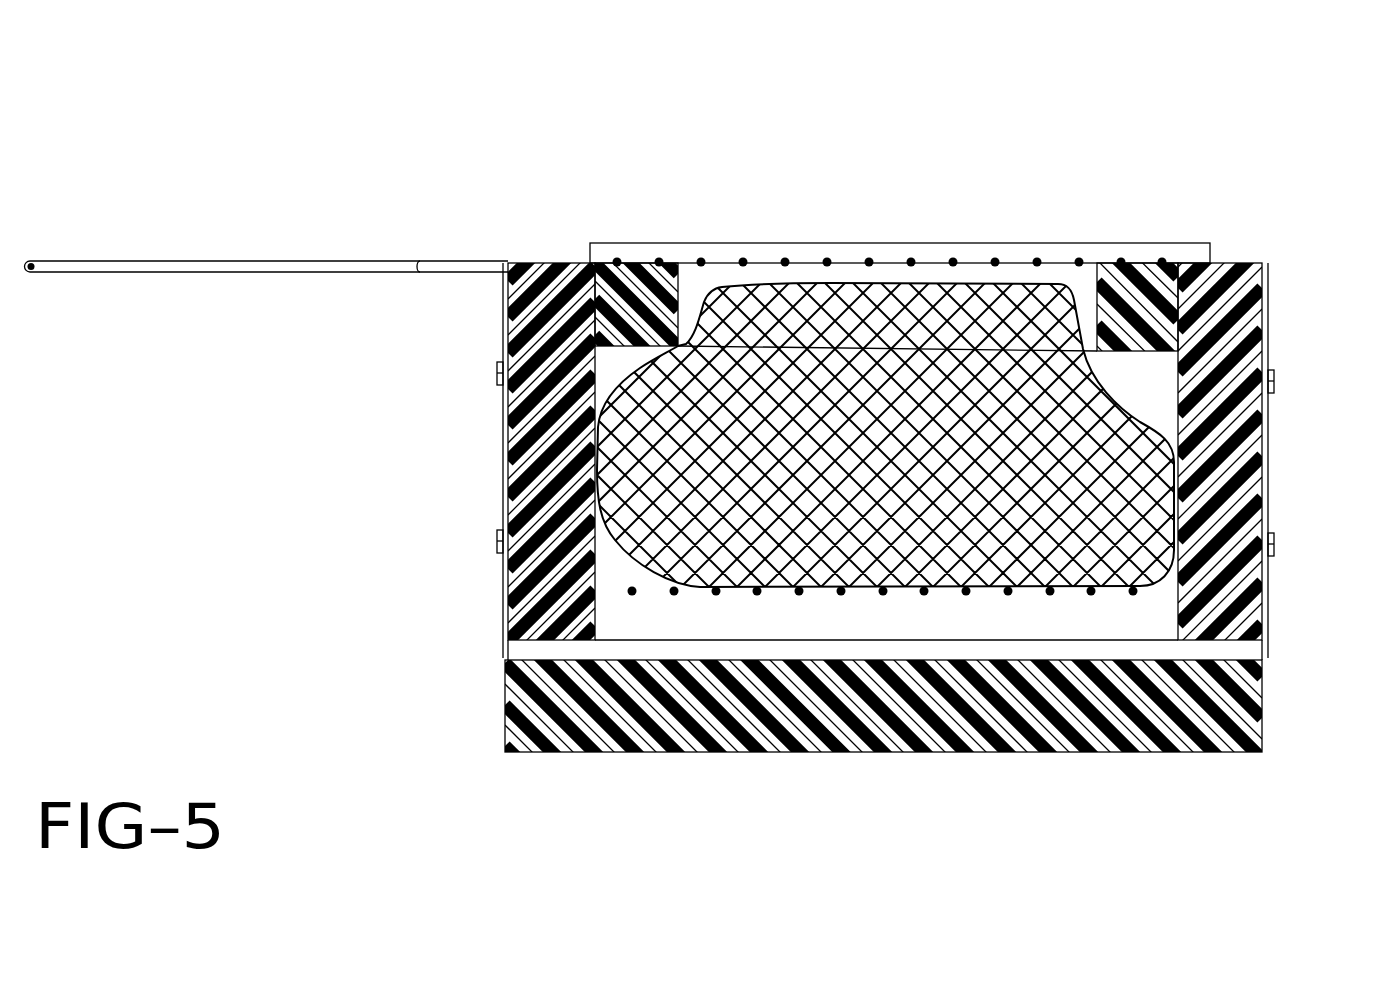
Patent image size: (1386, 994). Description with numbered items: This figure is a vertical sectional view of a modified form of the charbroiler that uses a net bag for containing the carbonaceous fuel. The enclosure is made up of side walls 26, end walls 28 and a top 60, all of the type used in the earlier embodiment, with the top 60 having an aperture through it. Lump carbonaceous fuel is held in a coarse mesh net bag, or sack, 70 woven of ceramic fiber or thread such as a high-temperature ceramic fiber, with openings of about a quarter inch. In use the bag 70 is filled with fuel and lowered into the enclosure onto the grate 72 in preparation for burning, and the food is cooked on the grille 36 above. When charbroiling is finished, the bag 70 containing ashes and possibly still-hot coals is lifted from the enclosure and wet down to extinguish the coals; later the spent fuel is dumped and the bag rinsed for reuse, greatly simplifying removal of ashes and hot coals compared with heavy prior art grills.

The side walls 26 is at (513, 572).
The end walls 28 is at (980, 620).
The grille 36 is at (376, 260).
The top member 60 is at (1145, 300).
The net bag 70 is at (1163, 435).
The grate 72 is at (842, 596).